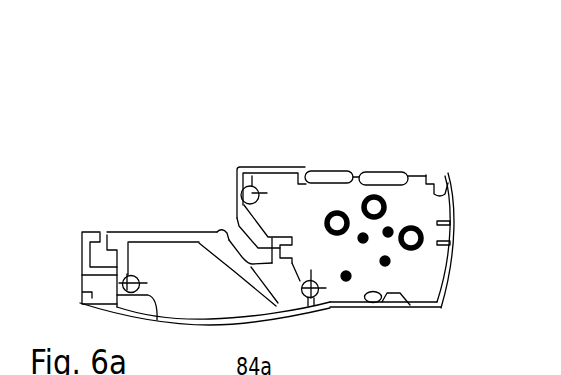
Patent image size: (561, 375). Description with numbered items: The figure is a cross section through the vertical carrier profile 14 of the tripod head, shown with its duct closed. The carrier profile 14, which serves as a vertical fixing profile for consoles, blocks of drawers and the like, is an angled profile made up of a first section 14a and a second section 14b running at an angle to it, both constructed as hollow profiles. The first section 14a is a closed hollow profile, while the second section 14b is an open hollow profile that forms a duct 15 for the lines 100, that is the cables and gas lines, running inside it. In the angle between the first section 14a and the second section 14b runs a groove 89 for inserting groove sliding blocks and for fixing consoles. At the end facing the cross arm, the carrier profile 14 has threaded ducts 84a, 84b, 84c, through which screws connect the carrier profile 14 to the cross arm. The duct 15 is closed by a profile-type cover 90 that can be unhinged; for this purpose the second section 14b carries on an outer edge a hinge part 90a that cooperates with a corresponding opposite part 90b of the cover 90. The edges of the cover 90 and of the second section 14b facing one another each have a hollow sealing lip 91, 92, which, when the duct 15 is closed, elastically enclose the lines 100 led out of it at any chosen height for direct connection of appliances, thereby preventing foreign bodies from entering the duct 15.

The carrier profile 14 is at (147, 226).
The first section 14a is at (183, 248).
The second section 14b is at (271, 165).
The duct 15 is at (423, 270).
The threaded duct 84a is at (150, 300).
The threaded duct 84b is at (251, 167).
The threaded duct 84c is at (317, 306).
The groove 89 is at (229, 234).
The cover 90 is at (450, 285).
The hinge part 90a is at (372, 304).
The opposite part 90b is at (412, 306).
The hollow sealing lip 91 is at (333, 167).
The hollow sealing lip 92 is at (378, 168).
The lines 100 is at (395, 228).